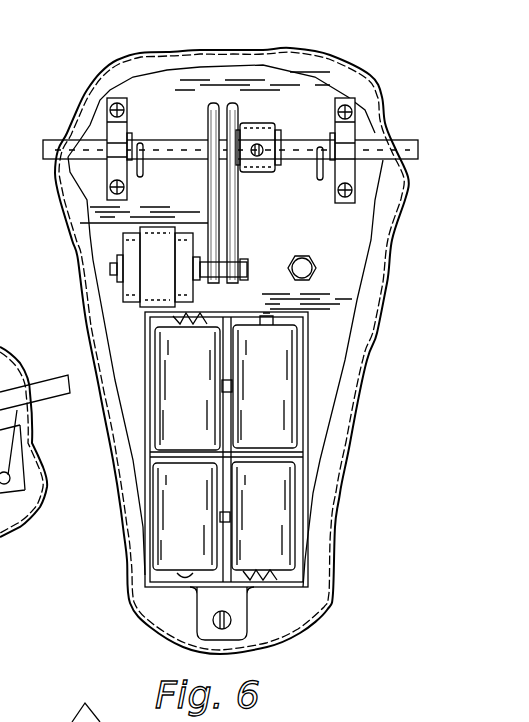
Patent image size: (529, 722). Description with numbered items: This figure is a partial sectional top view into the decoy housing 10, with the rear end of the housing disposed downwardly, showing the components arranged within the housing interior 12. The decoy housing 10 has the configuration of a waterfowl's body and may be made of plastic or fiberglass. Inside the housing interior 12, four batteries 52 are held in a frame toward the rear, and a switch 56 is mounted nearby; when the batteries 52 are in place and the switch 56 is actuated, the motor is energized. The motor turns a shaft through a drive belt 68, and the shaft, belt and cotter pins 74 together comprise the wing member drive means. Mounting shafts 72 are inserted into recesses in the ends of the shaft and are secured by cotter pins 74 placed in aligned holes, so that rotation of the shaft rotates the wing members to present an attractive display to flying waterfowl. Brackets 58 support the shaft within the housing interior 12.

The decoy housing 10 is at (283, 48).
The housing interior 12 is at (162, 612).
The batteries 52 is at (187, 368).
The switch 56 is at (305, 268).
The mounting bracket 58 is at (115, 137).
The drive belt 68 is at (234, 243).
The mounting shafts 72 is at (23, 721).
The cotter pins 74 is at (143, 172).